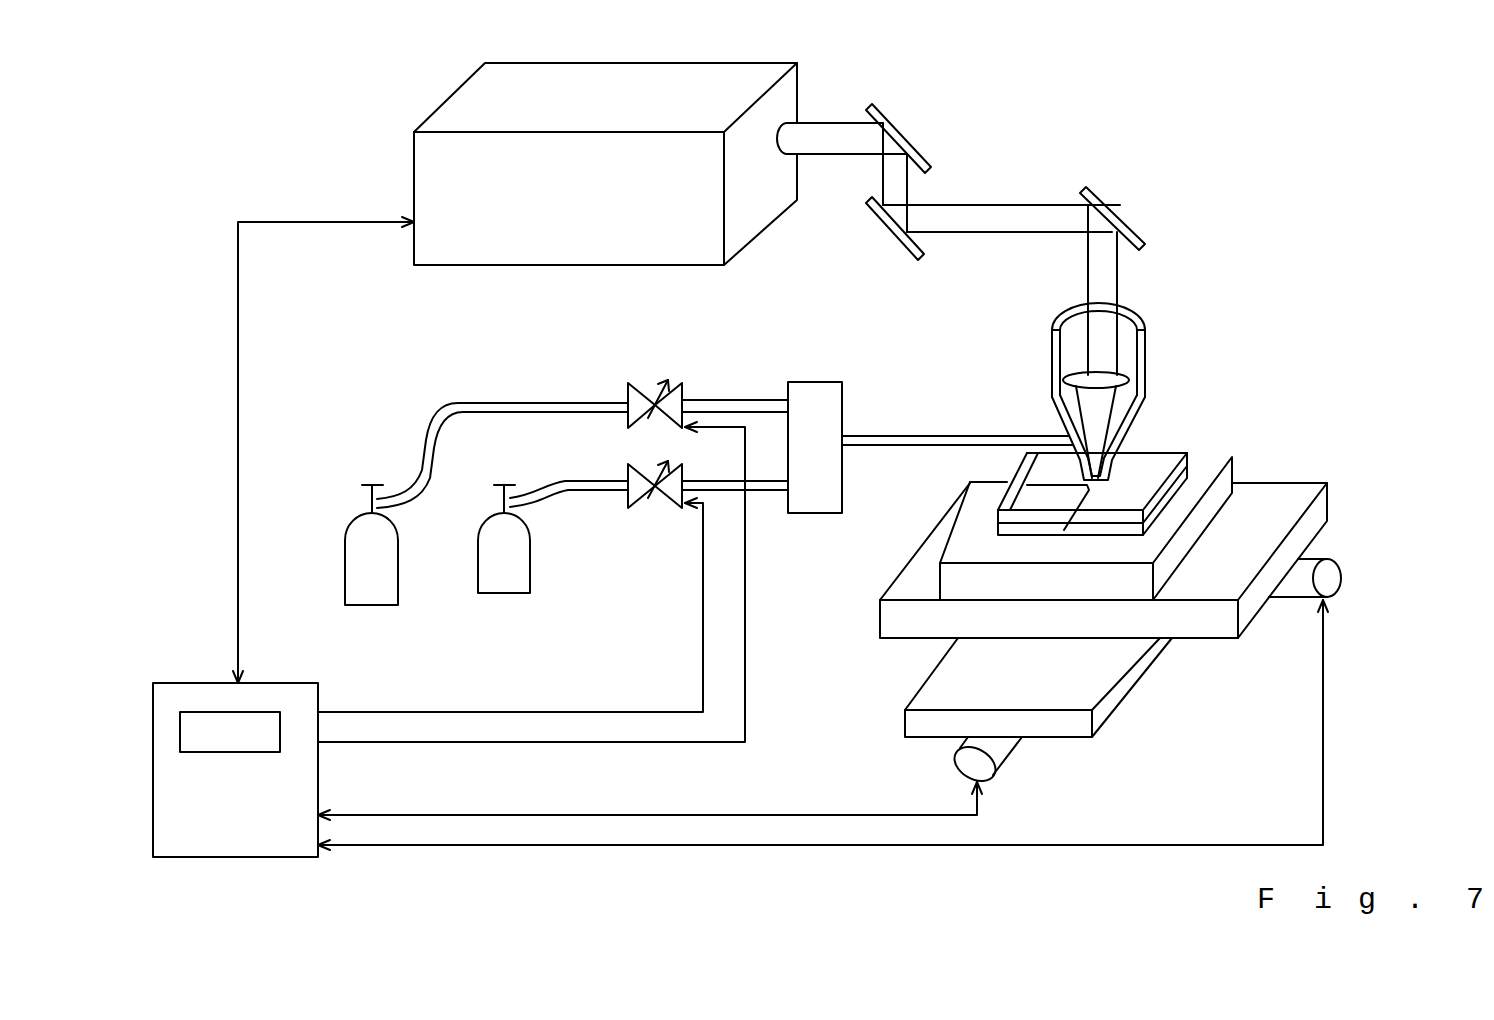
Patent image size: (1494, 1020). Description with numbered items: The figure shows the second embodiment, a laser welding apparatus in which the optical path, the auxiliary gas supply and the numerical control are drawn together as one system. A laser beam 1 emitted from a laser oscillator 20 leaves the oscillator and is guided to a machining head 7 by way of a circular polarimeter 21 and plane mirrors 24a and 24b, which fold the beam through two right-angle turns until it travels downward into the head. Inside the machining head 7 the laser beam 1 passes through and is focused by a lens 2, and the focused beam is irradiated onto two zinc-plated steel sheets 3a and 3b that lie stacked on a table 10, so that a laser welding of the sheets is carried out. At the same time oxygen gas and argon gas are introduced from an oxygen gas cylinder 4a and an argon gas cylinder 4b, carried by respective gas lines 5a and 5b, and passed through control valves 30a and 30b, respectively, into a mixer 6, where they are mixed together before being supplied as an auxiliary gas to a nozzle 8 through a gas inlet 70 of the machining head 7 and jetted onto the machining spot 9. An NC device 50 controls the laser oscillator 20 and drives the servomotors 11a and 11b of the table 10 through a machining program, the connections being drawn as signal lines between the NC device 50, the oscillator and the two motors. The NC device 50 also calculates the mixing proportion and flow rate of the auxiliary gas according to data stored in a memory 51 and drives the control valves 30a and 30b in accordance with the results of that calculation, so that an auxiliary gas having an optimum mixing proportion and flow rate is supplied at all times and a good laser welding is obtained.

The laser beam 1 is at (828, 120).
The lens 2 is at (1078, 372).
The zinc-plated steel sheet 3a is at (1157, 450).
The zinc-plated steel sheet 3b is at (1190, 474).
The oxygen gas cylinder 4a is at (378, 606).
The argon gas cylinder 4b is at (505, 594).
The oxygen gas pipe 5a is at (507, 403).
The argon gas pipe 5b is at (583, 492).
The mixer 6 is at (805, 513).
The machining head 7 is at (1085, 391).
The nozzle 8 is at (1085, 486).
The machining spot 9 is at (1085, 500).
The table 10 is at (1240, 478).
The servomotor 11a is at (1020, 745).
The servomotor 11b is at (1297, 602).
The laser oscillator 20 is at (447, 98).
The bending mirror 21 is at (905, 130).
The plane mirror 24a is at (888, 233).
The plane mirror 24b is at (1108, 210).
The control valve 30a is at (638, 383).
The control valve 30b is at (668, 507).
The NC device 50 is at (449, 537).
The memory 51 is at (247, 712).
The gas inlet 70 is at (1068, 430).